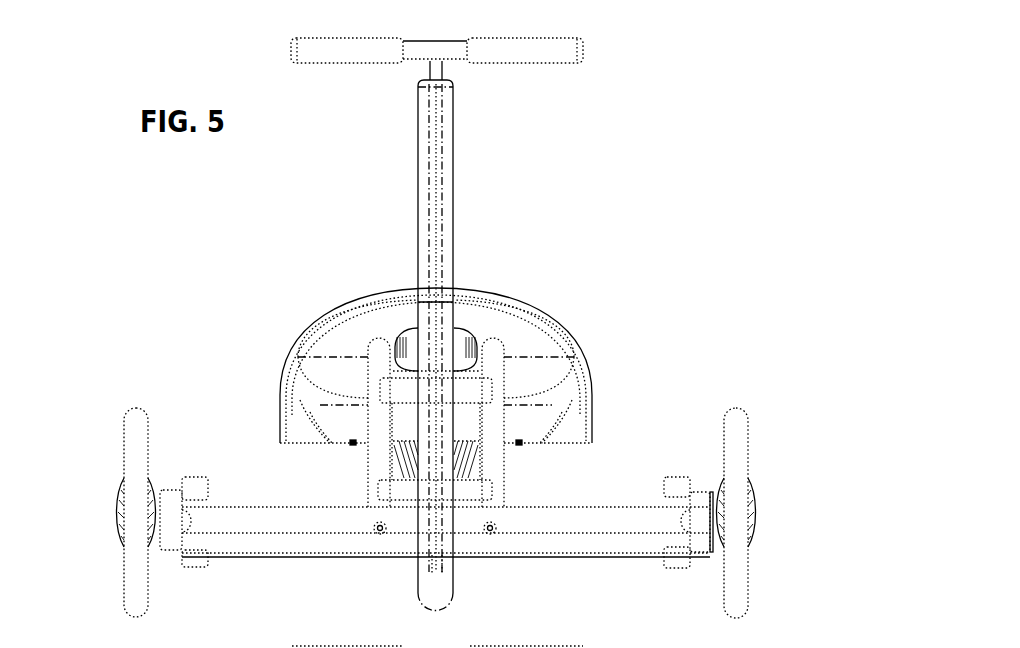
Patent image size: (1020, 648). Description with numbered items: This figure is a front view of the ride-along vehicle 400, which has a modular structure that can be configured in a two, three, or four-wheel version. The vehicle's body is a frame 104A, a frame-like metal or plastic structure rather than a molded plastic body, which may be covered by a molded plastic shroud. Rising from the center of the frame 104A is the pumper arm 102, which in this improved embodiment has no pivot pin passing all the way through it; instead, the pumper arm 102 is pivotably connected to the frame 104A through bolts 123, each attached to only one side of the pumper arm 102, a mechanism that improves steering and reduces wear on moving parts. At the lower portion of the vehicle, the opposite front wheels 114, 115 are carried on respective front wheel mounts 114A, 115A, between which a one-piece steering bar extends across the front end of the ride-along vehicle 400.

The pumper arm 102 is at (420, 195).
The ride-along vehicle 400 is at (202, 313).
The bolts 123 is at (367, 348).
The frame 104A is at (495, 497).
The front wheel 114 is at (747, 600).
The front wheel mount 114A is at (695, 553).
The front wheel 115 is at (128, 602).
The front wheel mount 115A is at (168, 550).